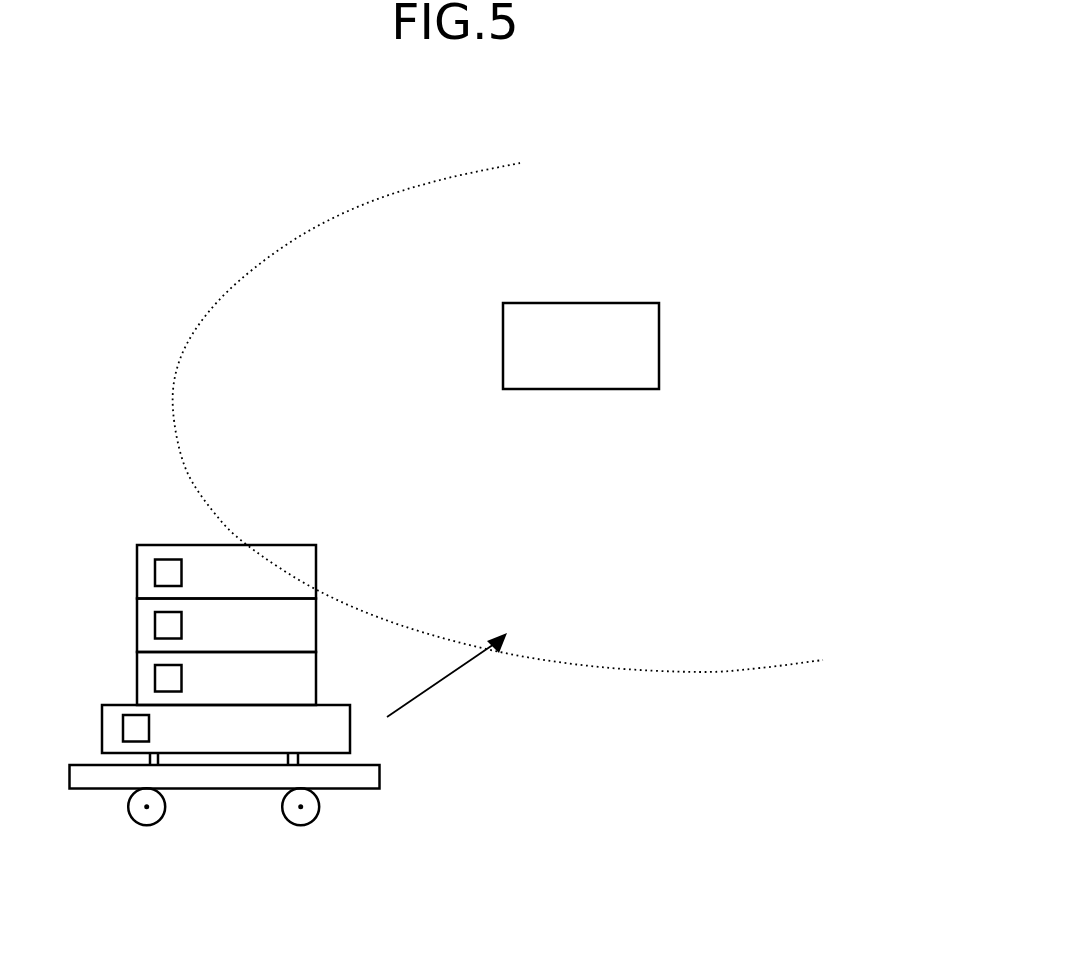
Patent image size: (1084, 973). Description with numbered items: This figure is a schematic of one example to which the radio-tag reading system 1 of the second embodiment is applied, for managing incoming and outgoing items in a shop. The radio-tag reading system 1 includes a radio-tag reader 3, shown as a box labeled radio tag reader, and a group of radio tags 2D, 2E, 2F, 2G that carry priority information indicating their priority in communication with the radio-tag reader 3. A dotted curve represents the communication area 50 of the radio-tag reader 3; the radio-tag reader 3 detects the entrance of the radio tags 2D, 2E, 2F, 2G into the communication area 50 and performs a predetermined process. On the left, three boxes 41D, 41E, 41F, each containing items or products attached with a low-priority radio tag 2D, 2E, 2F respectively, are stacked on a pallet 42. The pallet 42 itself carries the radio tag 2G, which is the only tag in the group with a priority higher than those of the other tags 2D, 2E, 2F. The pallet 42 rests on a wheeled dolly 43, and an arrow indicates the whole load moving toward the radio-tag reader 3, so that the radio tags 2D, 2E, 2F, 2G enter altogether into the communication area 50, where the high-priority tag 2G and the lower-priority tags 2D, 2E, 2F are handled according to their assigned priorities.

The radio-tag reading system 1 is at (790, 201).
The radio-tag reader 3 is at (625, 303).
The communication area 50 is at (743, 674).
The box 41D is at (303, 572).
The box 41E is at (303, 645).
The box 41F is at (303, 677).
The radio tag 2D is at (155, 575).
The radio tag 2E is at (155, 628).
The radio tag 2F is at (155, 683).
The radio tag 2G is at (123, 730).
The pallet 42 is at (350, 729).
The dolly 43 is at (125, 778).